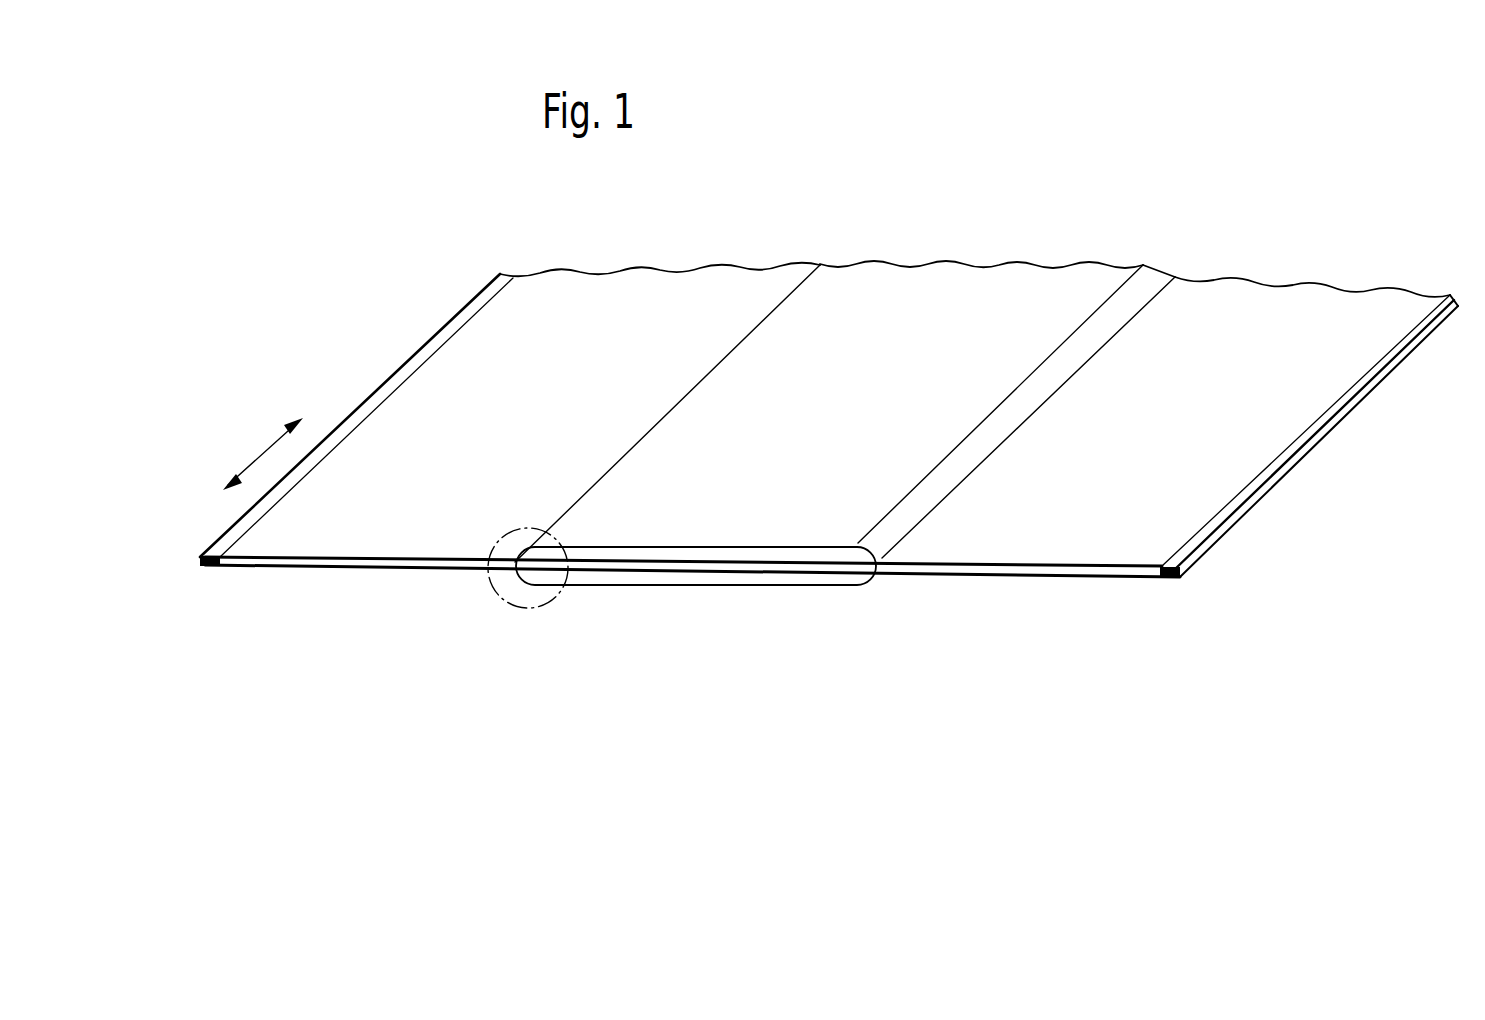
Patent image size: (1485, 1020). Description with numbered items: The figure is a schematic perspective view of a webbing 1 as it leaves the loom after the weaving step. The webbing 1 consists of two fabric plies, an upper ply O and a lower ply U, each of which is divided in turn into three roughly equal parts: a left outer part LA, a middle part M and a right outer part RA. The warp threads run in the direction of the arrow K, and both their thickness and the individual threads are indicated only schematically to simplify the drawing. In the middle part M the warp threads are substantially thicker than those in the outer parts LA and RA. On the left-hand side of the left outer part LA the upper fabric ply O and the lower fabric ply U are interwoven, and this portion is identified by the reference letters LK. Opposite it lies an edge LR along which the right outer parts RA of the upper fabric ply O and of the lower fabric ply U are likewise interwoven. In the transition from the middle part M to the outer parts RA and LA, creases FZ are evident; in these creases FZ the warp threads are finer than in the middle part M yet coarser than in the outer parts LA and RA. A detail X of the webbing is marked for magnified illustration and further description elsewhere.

The webbing 1 is at (753, 615).
The left outer part LA is at (618, 317).
The middle part M is at (927, 305).
The upper ply O is at (1282, 310).
The right outer part RA is at (1248, 248).
The arrow indicating warp direction K is at (257, 460).
The left interwoven portion LK is at (201, 578).
The right edge LR is at (1172, 598).
The creases FZ is at (557, 513).
The detail X is at (558, 593).
The lower ply U is at (1233, 462).